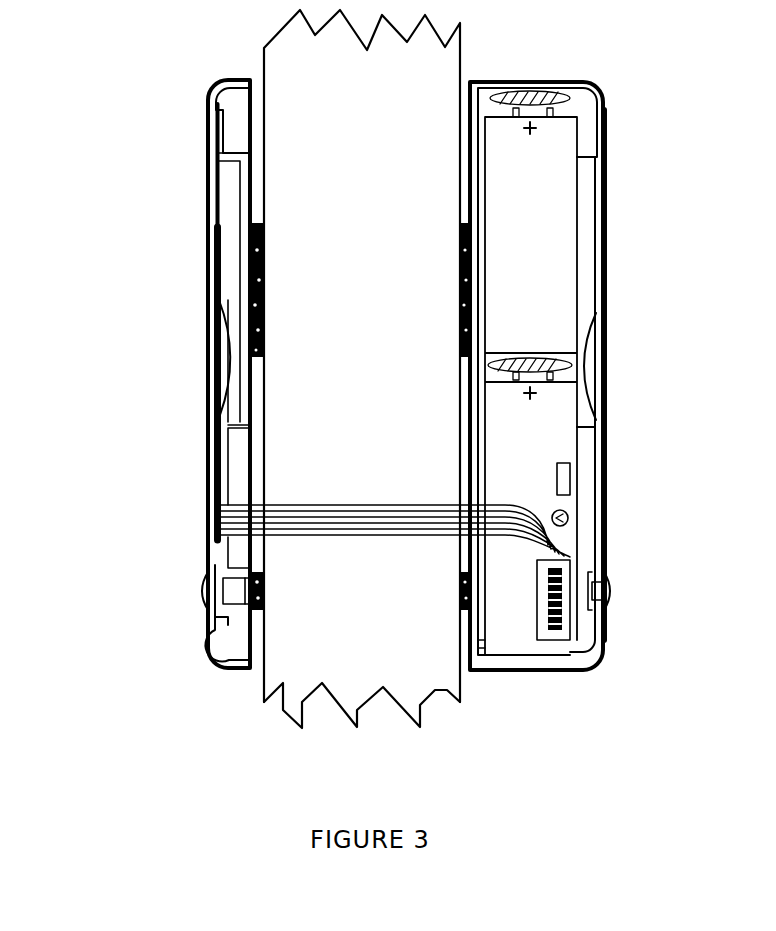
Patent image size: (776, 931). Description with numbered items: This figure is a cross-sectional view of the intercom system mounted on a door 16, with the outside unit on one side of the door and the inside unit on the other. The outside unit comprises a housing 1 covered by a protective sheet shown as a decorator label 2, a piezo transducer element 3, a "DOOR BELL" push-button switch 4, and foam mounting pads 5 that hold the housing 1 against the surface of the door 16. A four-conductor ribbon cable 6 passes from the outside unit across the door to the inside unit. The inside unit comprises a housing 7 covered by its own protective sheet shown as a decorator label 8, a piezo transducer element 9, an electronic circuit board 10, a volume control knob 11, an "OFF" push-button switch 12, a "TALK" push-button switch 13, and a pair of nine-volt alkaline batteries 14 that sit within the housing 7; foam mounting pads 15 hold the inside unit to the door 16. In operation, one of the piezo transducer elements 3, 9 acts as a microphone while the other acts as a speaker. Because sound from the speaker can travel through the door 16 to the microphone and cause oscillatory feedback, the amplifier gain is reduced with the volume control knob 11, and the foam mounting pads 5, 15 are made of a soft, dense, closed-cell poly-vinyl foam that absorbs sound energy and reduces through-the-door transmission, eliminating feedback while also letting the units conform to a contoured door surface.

The housing 1 is at (185, 356).
The decorator label 2 is at (154, 375).
The piezo transducer element 3 is at (155, 326).
The "DOOR BELL" push-button switch 4 is at (173, 581).
The foam mounting pads 5 is at (300, 416).
The 4-conductor ribbon cable 6 is at (395, 491).
The housing 7 is at (585, 359).
The decorator label 8 is at (589, 371).
The piezo transducer element 9 is at (655, 350).
The electronic circuit board 10 is at (639, 505).
The volume control knob 11 is at (615, 637).
The "OFF" push-button switch 12 is at (666, 575).
The "TALK" push-button switch 13 is at (675, 606).
The 9-volt alkaline batteries 14 is at (531, 373).
The foam mounting pads 15 is at (407, 416).
The door 16 is at (362, 369).